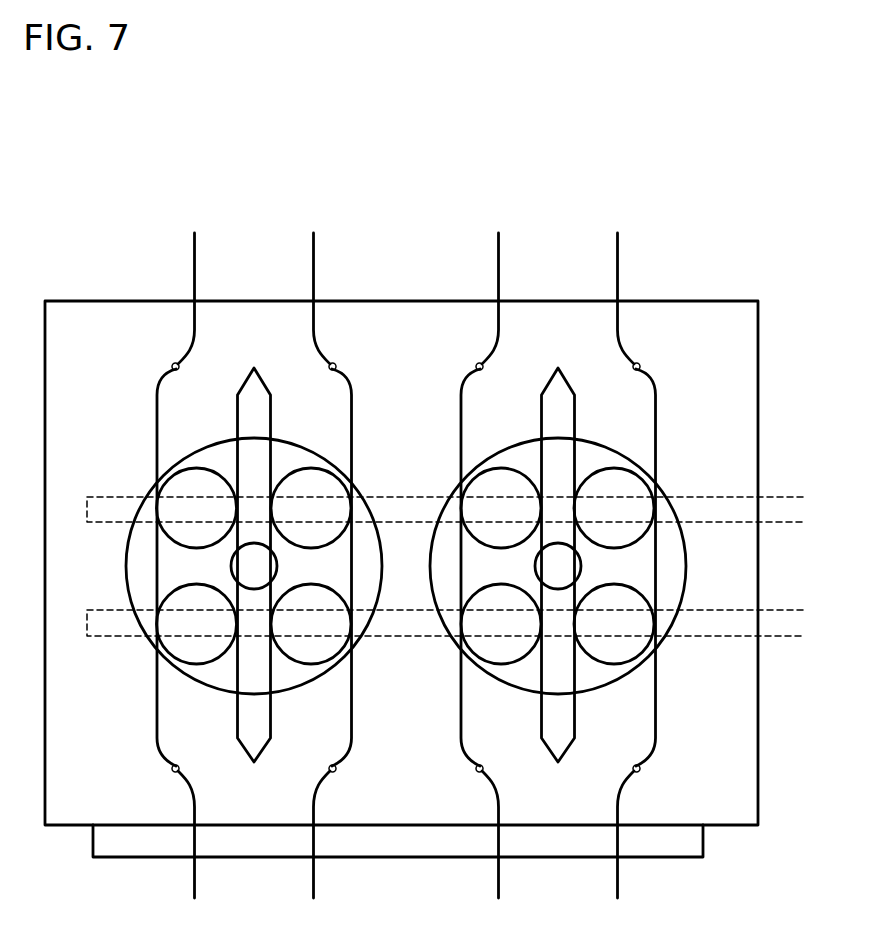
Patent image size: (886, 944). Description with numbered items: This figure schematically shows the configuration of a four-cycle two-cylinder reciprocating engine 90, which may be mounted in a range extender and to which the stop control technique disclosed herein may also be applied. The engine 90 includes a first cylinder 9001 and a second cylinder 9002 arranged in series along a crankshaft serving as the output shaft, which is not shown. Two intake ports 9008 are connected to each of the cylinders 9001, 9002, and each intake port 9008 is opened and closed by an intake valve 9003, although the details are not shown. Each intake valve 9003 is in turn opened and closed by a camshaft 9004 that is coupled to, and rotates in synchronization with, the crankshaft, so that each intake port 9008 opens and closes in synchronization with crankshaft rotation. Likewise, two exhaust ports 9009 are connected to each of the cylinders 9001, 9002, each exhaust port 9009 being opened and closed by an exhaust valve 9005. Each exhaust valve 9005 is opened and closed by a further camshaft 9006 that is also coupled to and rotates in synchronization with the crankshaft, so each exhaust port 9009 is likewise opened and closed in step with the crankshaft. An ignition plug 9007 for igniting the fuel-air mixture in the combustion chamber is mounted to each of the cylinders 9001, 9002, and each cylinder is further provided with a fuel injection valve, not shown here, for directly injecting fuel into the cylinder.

The four-cycle two-cylinder reciprocating engine 90 is at (672, 154).
The first cylinder 9001 is at (126, 570).
The second cylinder 9002 is at (723, 556).
The intake valve 9003 is at (198, 480).
The camshaft 9004 is at (711, 497).
The exhaust valve 9005 is at (197, 655).
The camshaft 9006 is at (710, 636).
The ignition plug 9007 is at (278, 567).
The intake port 9008 is at (178, 362).
The exhaust port 9009 is at (178, 772).